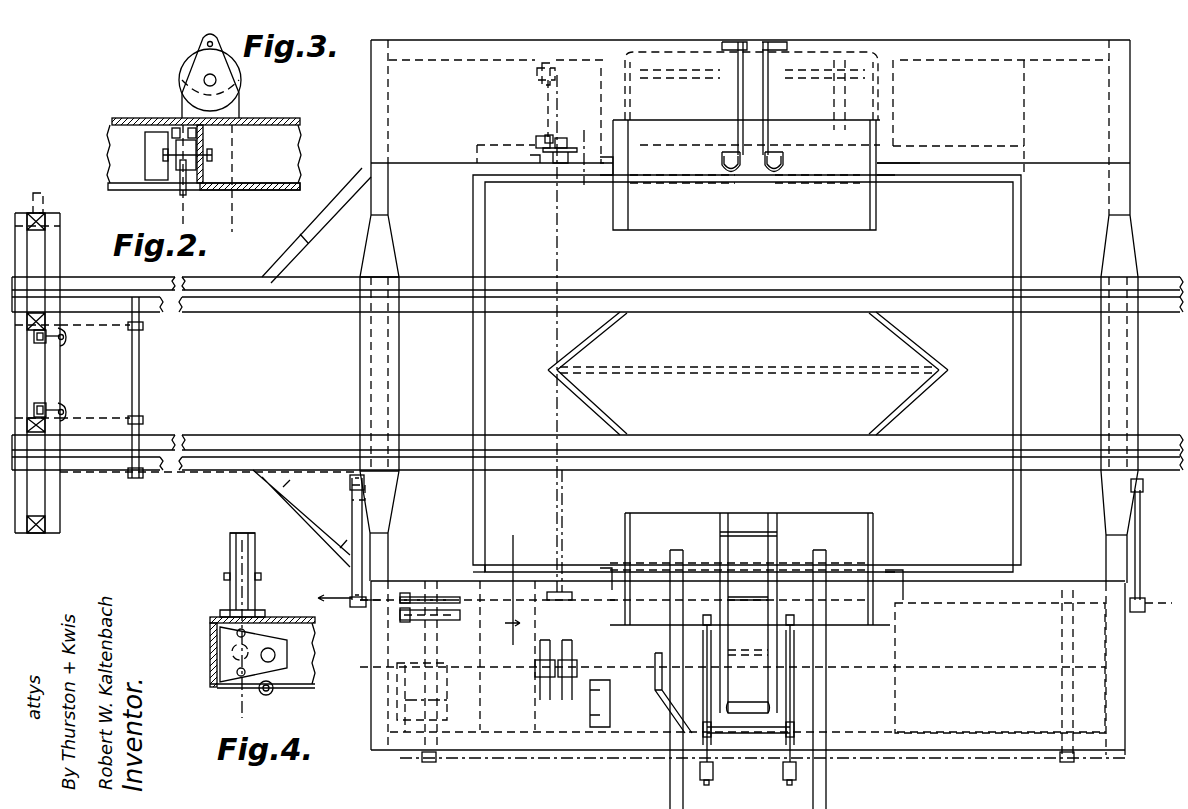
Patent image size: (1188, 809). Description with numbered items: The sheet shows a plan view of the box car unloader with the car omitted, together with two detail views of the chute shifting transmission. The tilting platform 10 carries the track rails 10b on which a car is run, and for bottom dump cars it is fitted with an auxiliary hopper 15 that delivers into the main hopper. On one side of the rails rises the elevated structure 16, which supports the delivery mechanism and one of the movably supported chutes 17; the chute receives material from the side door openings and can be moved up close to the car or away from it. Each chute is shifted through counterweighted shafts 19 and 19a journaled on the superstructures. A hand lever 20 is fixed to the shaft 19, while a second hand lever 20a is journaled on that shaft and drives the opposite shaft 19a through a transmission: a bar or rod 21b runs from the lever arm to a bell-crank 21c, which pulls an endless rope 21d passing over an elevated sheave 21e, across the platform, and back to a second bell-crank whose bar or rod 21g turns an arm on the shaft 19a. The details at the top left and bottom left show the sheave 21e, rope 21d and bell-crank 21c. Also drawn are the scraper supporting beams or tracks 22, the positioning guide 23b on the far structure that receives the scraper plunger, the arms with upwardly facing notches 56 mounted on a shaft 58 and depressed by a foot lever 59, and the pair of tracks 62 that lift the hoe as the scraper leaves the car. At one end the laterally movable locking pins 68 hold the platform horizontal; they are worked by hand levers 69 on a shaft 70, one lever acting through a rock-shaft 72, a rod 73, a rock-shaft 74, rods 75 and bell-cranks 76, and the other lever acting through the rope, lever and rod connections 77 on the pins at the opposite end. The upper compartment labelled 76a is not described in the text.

In FIG. 2, the tilting platform 10 is at (597, 463).
In FIG. 2, the track rails 10b is at (1057, 448).
In FIG. 2, the auxiliary hopper 15 is at (748, 373).
In FIG. 2, the elevated structure 16 is at (1000, 668).
In FIG. 2, the chute 17 is at (868, 200).
In FIG. 2, the shaft 19 is at (484, 676).
In FIG. 2, the shaft 19a is at (545, 65).
In FIG. 2, the hand lever 20 is at (566, 660).
In FIG. 2, the hand lever 20a is at (548, 670).
In FIG. 4, the bar or rod 21b is at (320, 692).
In FIG. 4, the bell-crank 21c is at (262, 696).
In FIG. 4, the endless rope 21d is at (242, 608).
In FIG. 2, the endless rope 21d is at (562, 510).
In FIG. 4, the elevated sheave 21e is at (243, 565).
In FIG. 2, the elevated sheave 21e is at (553, 153).
In FIG. 2, the bar or rod 21g is at (547, 110).
In FIG. 2, the scraper supporting beams or tracks 22 is at (670, 585).
In FIG. 2, the positioning guide 23b is at (733, 176).
In FIG. 2, the upwardly facing notches 56 is at (709, 612).
In FIG. 2, the shaft 58 is at (753, 735).
In FIG. 2, the foot lever 59 is at (660, 655).
In FIG. 2, the tracks 62 is at (777, 532).
In FIG. 2, the locking pins 68 is at (47, 253).
In FIG. 2, the hand levers 69 is at (430, 598).
In FIG. 2, the shaft 70 is at (427, 652).
In FIG. 2, the rock-shaft 72 is at (352, 578).
In FIG. 2, the rod 73 is at (230, 473).
In FIG. 2, the rock-shaft 74 is at (140, 383).
In FIG. 2, the rods 75 is at (107, 327).
In FIG. 2, the bell-cranks 76 is at (67, 410).
In FIG. 2, the upper compartment 76a is at (967, 103).
In FIG. 2, the rope, lever and rod connections 77 is at (937, 760).